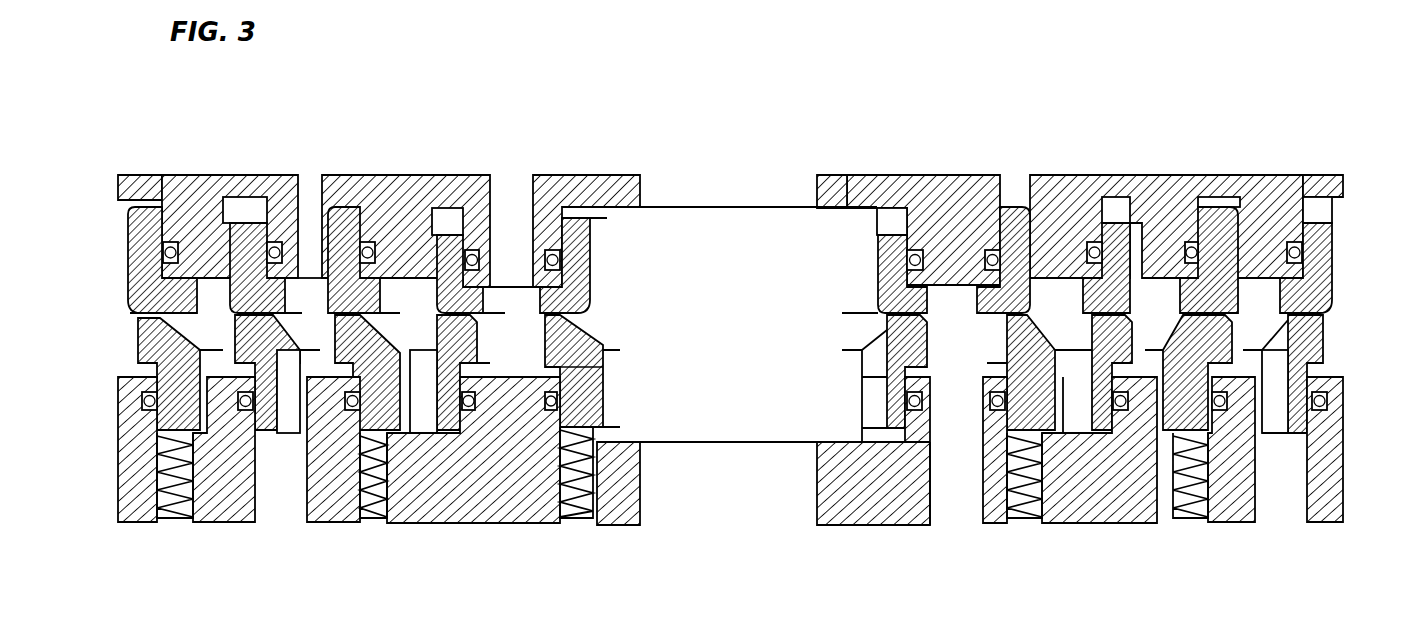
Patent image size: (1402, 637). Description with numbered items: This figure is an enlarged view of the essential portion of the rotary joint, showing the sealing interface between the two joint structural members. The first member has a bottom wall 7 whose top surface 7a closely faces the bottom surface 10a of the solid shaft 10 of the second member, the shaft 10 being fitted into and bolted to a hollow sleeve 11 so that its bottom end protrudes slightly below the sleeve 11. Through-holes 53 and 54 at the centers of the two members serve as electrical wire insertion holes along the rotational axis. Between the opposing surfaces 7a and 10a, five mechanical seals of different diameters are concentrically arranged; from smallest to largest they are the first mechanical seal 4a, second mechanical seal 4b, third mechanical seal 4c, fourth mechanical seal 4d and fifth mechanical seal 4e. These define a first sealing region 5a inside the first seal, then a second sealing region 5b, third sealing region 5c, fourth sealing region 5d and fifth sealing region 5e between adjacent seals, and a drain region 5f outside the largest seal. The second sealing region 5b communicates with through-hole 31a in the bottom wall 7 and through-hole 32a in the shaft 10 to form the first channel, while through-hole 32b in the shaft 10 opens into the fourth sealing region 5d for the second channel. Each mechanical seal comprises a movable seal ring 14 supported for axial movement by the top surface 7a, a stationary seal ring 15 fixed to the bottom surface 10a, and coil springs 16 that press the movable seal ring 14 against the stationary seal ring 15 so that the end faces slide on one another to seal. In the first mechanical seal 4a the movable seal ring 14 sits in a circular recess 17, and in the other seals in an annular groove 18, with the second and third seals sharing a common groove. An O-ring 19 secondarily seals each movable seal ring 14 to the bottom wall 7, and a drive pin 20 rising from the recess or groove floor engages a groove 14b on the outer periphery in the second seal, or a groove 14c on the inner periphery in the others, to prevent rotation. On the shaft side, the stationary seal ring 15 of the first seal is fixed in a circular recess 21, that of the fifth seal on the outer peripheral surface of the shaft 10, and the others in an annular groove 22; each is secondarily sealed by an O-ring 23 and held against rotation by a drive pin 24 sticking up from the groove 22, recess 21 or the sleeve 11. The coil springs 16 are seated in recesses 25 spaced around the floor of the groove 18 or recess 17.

The first mechanical seal 4a is at (600, 332).
The second mechanical seal 4b is at (472, 430).
The third mechanical seal 4c is at (372, 217).
The fourth mechanical seal 4d is at (215, 212).
The fifth mechanical seal 4e is at (124, 264).
The first sealing region 5a is at (663, 217).
The second sealing region 5b is at (948, 322).
The third sealing region 5c is at (1058, 323).
The fourth sealing region 5d is at (1165, 323).
The fifth sealing region 5e is at (1250, 322).
The drain region 5f is at (1347, 302).
The bottom wall 7 is at (1333, 492).
The top surface of the bottom wall 7a is at (122, 375).
The shaft 10 is at (965, 222).
The bottom surface of the shaft 10a is at (165, 312).
The sleeve 11 is at (1312, 178).
The movable seal ring 14 is at (170, 428).
The groove 14b is at (422, 370).
The groove 14c is at (288, 395).
The stationary seal ring 15 is at (128, 223).
The coil spring 16 is at (170, 517).
The circular recess 17 is at (563, 405).
The annular groove 18 is at (150, 413).
The O-ring 19 is at (912, 412).
The drive pin 20 is at (283, 433).
The circular recess 21 is at (893, 240).
The annular groove 22 is at (125, 183).
The O-ring 23 is at (553, 247).
The drive pin 24 is at (245, 210).
The recess 25 is at (247, 413).
The through-hole 31a is at (947, 510).
The through-hole 32a is at (503, 203).
The through-hole 32b is at (305, 210).
The through-hole 53 is at (813, 470).
The through-hole 54 is at (817, 187).